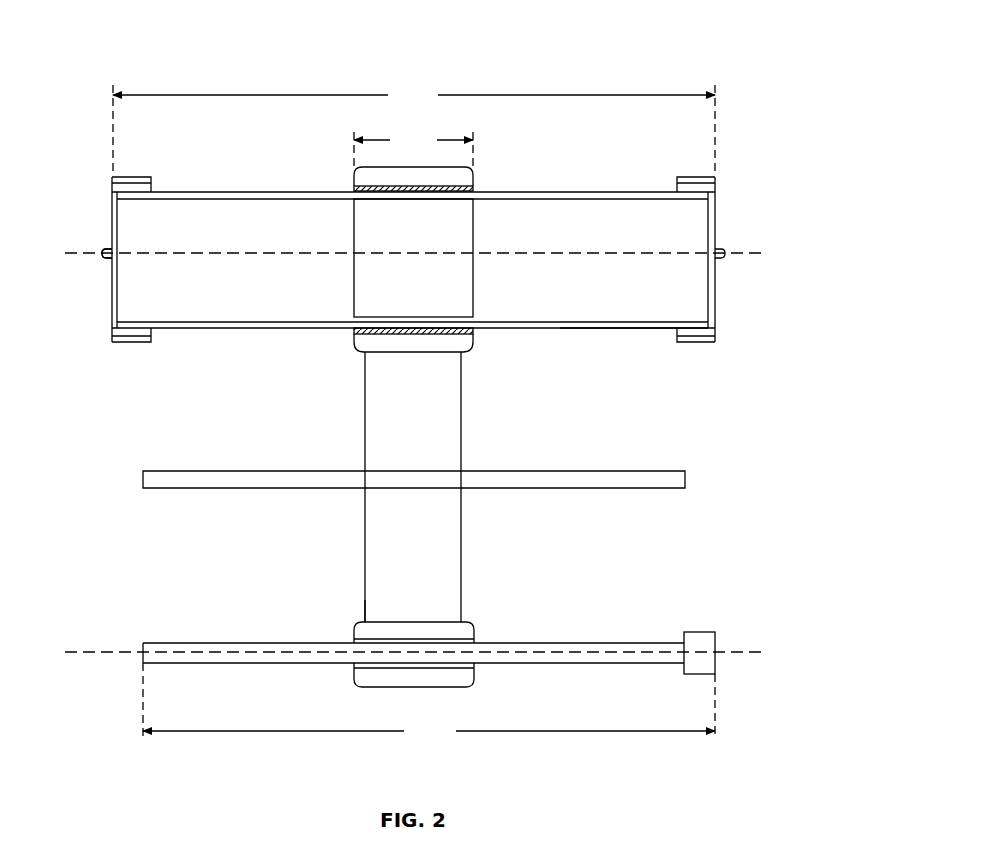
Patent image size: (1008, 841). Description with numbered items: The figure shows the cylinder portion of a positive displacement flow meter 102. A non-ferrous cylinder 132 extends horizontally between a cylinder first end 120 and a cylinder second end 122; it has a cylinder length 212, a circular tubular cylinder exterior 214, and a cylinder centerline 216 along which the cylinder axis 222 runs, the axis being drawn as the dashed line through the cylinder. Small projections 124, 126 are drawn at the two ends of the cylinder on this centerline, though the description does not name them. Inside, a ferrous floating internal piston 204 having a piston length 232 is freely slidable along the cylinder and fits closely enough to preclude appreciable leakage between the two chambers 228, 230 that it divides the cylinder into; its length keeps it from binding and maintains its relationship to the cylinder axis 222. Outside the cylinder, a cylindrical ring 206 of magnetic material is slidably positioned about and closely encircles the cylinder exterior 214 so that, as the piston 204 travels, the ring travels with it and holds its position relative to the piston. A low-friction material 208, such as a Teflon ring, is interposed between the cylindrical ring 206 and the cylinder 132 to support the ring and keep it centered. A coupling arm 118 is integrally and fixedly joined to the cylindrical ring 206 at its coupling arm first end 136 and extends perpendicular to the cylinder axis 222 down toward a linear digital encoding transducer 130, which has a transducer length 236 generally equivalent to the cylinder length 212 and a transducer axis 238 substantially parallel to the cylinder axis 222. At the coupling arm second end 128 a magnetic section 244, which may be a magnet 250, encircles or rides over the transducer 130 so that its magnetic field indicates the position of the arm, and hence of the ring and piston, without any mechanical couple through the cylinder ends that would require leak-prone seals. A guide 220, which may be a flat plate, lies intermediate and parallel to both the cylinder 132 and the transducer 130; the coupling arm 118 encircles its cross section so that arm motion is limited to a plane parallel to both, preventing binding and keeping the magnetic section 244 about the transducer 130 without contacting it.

The positive displacement flow meter 102 is at (630, 40).
The coupling arm 118 is at (462, 424).
The cylinder first end 120 is at (128, 337).
The cylinder second end 122 is at (700, 338).
The left pin 124 is at (104, 258).
The right pin 126 is at (728, 252).
The coupling arm second end 128 is at (464, 613).
The linear digital encoding transducer 130 is at (700, 632).
The cylinder 132 is at (608, 191).
The coupling arm first end 136 is at (468, 352).
The ferrous floating internal piston 204 is at (366, 292).
The cylindrical ring 206 is at (458, 180).
The low-friction material 208 is at (356, 189).
The cylinder length 212 is at (414, 129).
The cylinder exterior 214 is at (600, 332).
The cylinder centerline 216 is at (100, 253).
The guide 220 is at (156, 471).
The cylinder axis 222 is at (597, 251).
The first chamber 228 is at (221, 208).
The second chamber 230 is at (573, 206).
The piston length 232 is at (413, 148).
The transducer length 236 is at (429, 703).
The transducer axis 238 is at (120, 652).
The magnetic section 244 is at (358, 630).
The magnet 250 is at (358, 679).